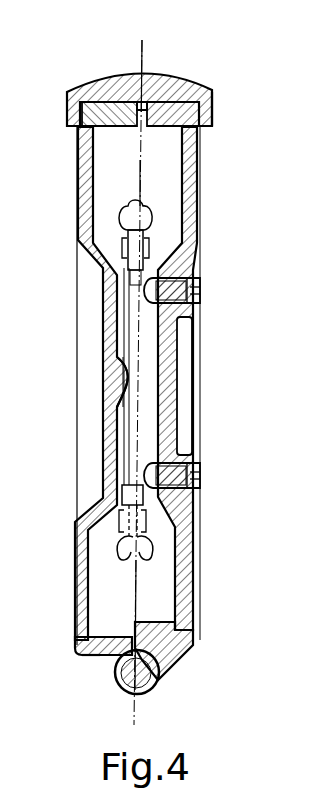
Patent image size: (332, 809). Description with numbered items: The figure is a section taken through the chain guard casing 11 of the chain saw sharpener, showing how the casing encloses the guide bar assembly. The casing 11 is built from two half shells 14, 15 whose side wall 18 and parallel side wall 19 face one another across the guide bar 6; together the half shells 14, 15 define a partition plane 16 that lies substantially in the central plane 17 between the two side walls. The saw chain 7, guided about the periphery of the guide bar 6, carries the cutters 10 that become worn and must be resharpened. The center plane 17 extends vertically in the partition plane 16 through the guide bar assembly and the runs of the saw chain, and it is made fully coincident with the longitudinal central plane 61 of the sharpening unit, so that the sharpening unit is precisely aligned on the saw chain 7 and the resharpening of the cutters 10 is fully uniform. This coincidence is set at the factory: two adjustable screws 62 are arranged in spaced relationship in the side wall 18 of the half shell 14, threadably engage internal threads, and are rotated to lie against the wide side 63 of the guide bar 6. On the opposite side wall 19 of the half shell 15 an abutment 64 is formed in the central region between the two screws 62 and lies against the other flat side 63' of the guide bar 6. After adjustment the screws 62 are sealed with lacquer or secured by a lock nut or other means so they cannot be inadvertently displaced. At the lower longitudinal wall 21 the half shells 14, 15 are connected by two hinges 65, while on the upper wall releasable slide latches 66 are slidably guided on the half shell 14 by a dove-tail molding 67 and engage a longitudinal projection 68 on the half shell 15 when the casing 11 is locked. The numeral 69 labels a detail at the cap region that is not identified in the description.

The guide bar 6 is at (133, 427).
The saw chain 7 is at (128, 240).
The cutters 10 is at (152, 215).
The chain guard casing 11 is at (76, 653).
The half shell 14 is at (193, 624).
The half shell 15 is at (76, 612).
The partition plane 16 is at (140, 128).
The central plane 17 is at (143, 58).
The side wall 18 is at (188, 241).
The side wall 19 is at (82, 191).
The lower longitudinal wall 21 is at (100, 660).
The longitudinal central plane 61 is at (136, 571).
The adjustable screws 62 is at (186, 290).
The wide side 63 is at (191, 386).
The flat side 63' is at (78, 353).
The abutment 64 is at (118, 383).
The hinges 65 is at (158, 676).
The slide latches 66 is at (77, 100).
The dove-tail molding 67 is at (208, 108).
The longitudinal projection 68 is at (128, 108).
The insert shoulder 69 is at (88, 122).